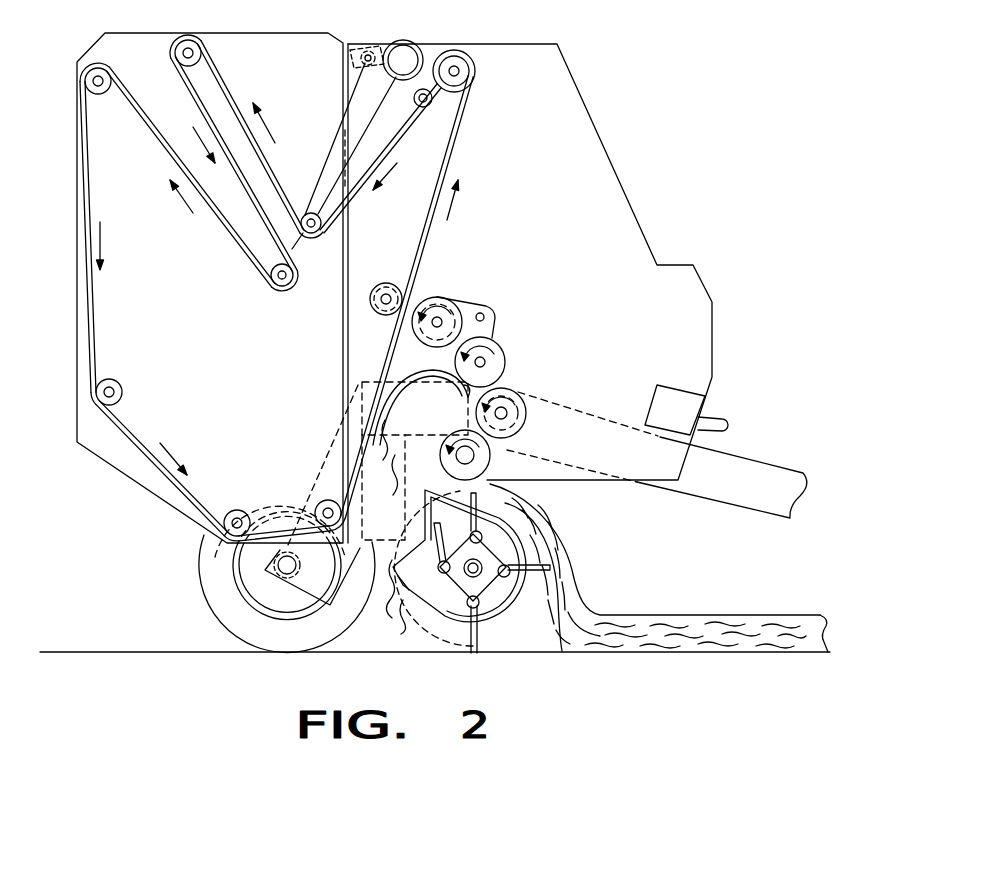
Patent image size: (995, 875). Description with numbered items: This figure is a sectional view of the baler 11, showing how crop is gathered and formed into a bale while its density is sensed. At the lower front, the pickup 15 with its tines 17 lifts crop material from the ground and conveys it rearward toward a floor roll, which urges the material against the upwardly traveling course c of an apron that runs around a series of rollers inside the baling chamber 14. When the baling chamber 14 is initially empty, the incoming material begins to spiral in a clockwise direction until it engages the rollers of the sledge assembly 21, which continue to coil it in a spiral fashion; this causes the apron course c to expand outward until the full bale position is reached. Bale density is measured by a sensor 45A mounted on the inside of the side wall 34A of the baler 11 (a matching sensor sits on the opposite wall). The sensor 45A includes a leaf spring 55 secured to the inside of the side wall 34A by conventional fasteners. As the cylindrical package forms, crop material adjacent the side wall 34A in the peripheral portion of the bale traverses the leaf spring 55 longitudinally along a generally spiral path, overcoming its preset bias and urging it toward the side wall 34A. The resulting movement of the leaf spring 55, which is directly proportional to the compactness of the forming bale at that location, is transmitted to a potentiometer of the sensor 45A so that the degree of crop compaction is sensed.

The baler 11 is at (607, 80).
The side wall 34A is at (566, 151).
The baling chamber 14 is at (430, 396).
The sledge assembly 21 is at (510, 313).
The sensor 45A is at (407, 410).
The leaf spring 55 is at (437, 455).
The upwardly traveling course of the apron C is at (345, 497).
The tines 17 is at (404, 592).
The pickup 15 is at (509, 632).